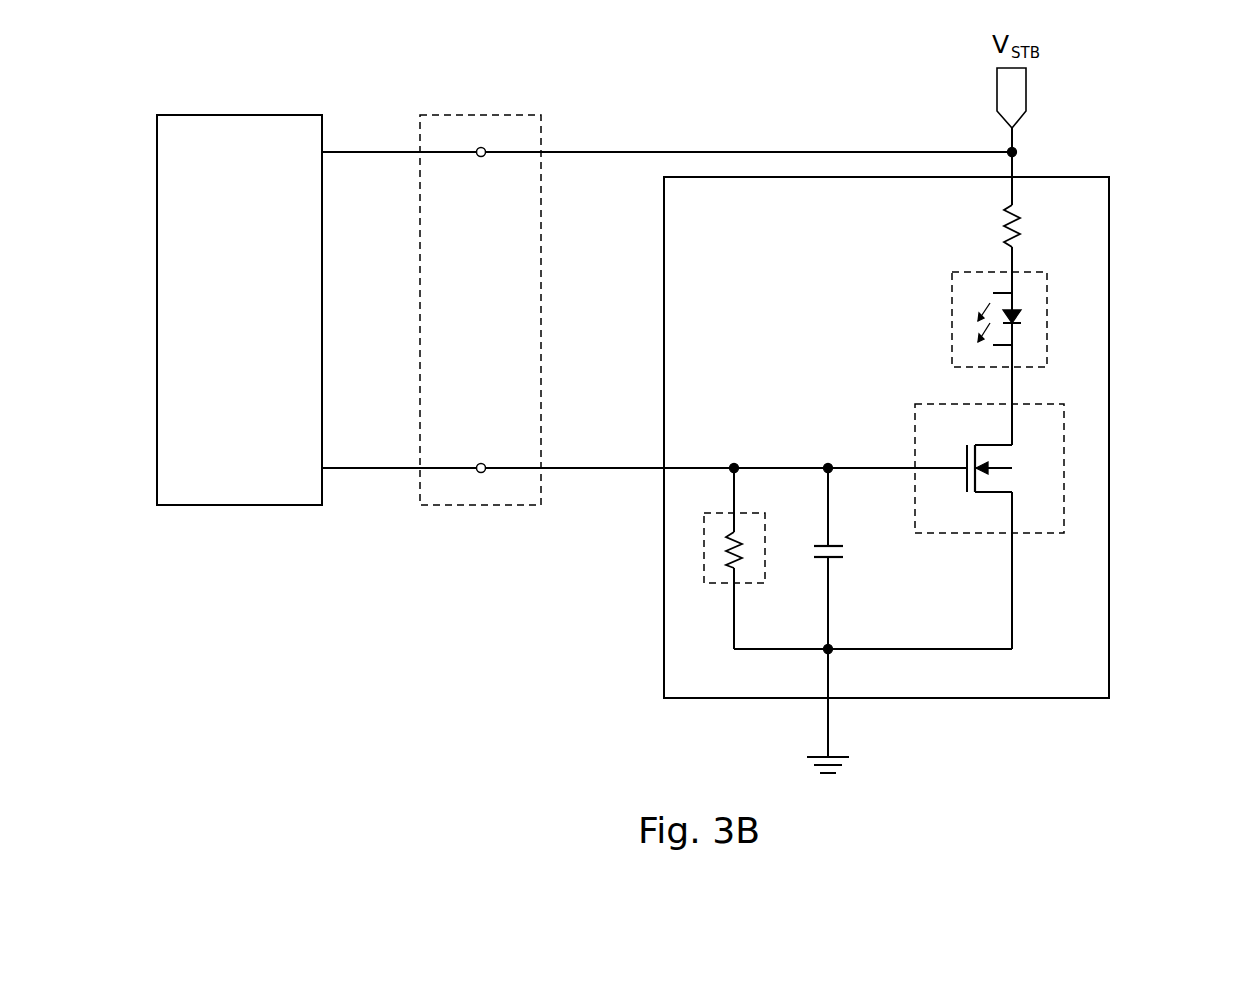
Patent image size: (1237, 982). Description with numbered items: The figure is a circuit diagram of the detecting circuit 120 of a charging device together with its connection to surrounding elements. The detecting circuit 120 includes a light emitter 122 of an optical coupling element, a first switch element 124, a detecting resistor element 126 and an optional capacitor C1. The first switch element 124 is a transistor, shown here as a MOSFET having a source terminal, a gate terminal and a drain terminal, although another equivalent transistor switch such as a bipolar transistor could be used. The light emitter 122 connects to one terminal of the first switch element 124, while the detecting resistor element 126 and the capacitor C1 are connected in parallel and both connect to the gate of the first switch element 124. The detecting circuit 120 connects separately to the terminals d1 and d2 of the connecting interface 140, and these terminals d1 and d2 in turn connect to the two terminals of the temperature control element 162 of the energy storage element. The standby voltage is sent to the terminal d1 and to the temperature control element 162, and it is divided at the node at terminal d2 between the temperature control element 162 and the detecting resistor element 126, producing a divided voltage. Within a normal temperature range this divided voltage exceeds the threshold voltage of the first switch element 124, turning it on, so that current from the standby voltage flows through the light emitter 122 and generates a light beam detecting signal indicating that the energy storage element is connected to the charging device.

The detecting circuit 120 is at (946, 462).
The light emitter 122 is at (1047, 313).
The first switch element 124 is at (1064, 468).
The detecting resistor element 126 is at (704, 556).
The connecting interface 140 is at (525, 115).
The temperature control element 162 is at (219, 369).
The terminal d1 is at (482, 147).
The terminal d2 is at (482, 474).
The capacitor C1 is at (847, 558).